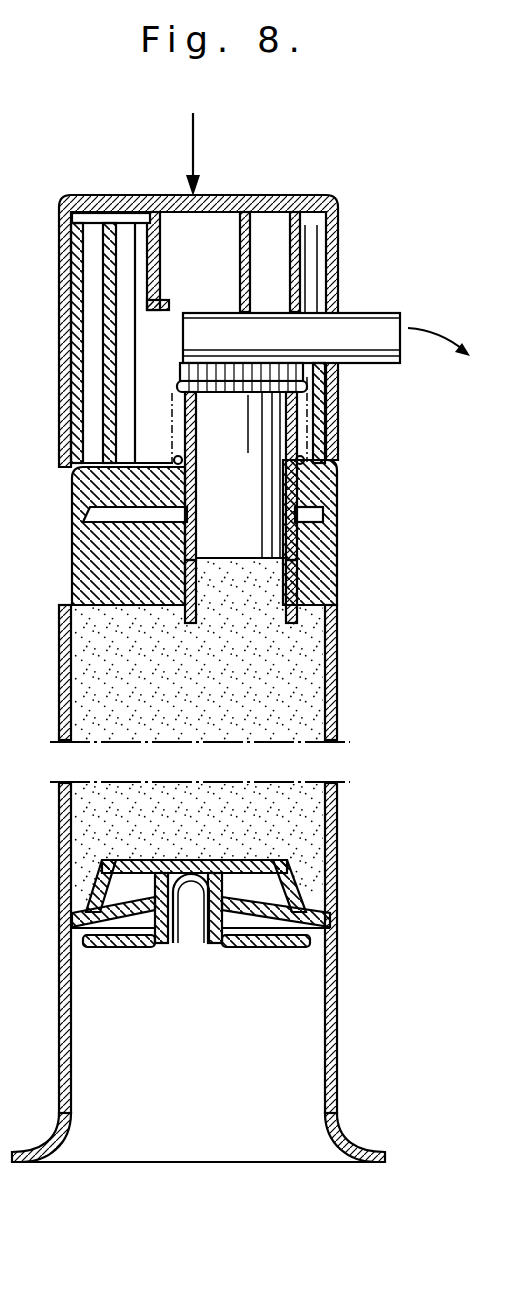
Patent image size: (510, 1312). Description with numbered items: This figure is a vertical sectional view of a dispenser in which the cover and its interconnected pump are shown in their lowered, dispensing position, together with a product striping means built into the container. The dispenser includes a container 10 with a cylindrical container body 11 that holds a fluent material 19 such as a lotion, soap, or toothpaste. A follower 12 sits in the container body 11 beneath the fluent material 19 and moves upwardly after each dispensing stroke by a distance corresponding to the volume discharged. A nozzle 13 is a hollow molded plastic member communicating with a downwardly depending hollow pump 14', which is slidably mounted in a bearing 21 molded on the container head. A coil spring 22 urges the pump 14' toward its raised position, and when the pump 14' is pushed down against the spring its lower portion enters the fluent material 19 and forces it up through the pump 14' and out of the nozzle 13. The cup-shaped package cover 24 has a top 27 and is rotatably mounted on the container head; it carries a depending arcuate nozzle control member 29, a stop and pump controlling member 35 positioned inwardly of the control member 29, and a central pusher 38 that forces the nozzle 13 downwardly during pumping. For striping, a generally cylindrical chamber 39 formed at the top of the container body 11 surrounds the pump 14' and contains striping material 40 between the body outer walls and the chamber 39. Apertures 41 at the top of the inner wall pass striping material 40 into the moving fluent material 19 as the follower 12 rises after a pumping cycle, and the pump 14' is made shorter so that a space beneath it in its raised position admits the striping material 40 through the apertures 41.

The container 10 is at (352, 711).
The container body 11 is at (338, 660).
The follower 12 is at (236, 959).
The nozzle 13 is at (370, 330).
The pump 14' is at (239, 476).
The fluent material 19 is at (211, 693).
The bearing 21 is at (292, 428).
The coil spring 22 is at (178, 386).
The package cover 24 is at (344, 195).
The top 27 is at (220, 196).
The nozzle control member 29 is at (297, 262).
The stop and pump controlling member 35 is at (105, 361).
The pusher 38 is at (240, 262).
The chamber 39 is at (175, 592).
The striping material 40 is at (72, 585).
The apertures 41 is at (195, 535).